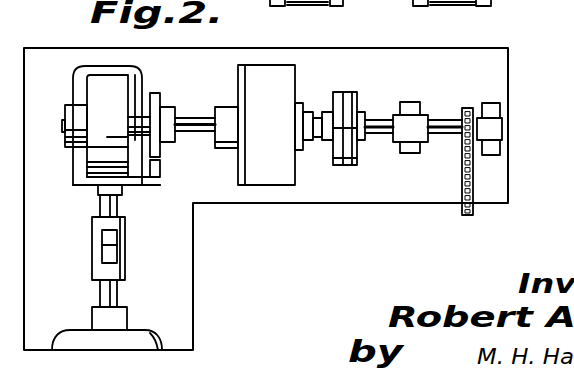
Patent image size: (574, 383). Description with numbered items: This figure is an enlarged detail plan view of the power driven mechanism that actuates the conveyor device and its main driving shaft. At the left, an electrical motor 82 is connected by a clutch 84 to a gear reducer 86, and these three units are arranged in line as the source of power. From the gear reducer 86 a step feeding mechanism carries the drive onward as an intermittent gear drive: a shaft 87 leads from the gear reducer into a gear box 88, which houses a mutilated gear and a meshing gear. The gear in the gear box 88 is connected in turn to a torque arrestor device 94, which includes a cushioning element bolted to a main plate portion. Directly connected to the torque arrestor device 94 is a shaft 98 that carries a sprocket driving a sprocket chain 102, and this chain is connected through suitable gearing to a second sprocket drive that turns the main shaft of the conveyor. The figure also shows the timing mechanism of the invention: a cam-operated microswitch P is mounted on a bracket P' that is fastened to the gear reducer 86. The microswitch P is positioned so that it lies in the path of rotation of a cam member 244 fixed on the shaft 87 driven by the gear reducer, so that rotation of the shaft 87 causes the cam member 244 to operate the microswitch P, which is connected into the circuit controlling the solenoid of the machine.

The electrical motor 82 is at (140, 336).
The clutch 84 is at (115, 248).
The gear reducer 86 is at (100, 100).
The shaft 87 is at (195, 130).
The gear box 88 is at (265, 90).
The torque arrestor device 94 is at (345, 103).
The shaft 98 is at (440, 127).
The sprocket chain 102 is at (465, 185).
The cam member 244 is at (160, 95).
The cam-operated microswitch P is at (166, 181).
The bracket P' is at (150, 203).